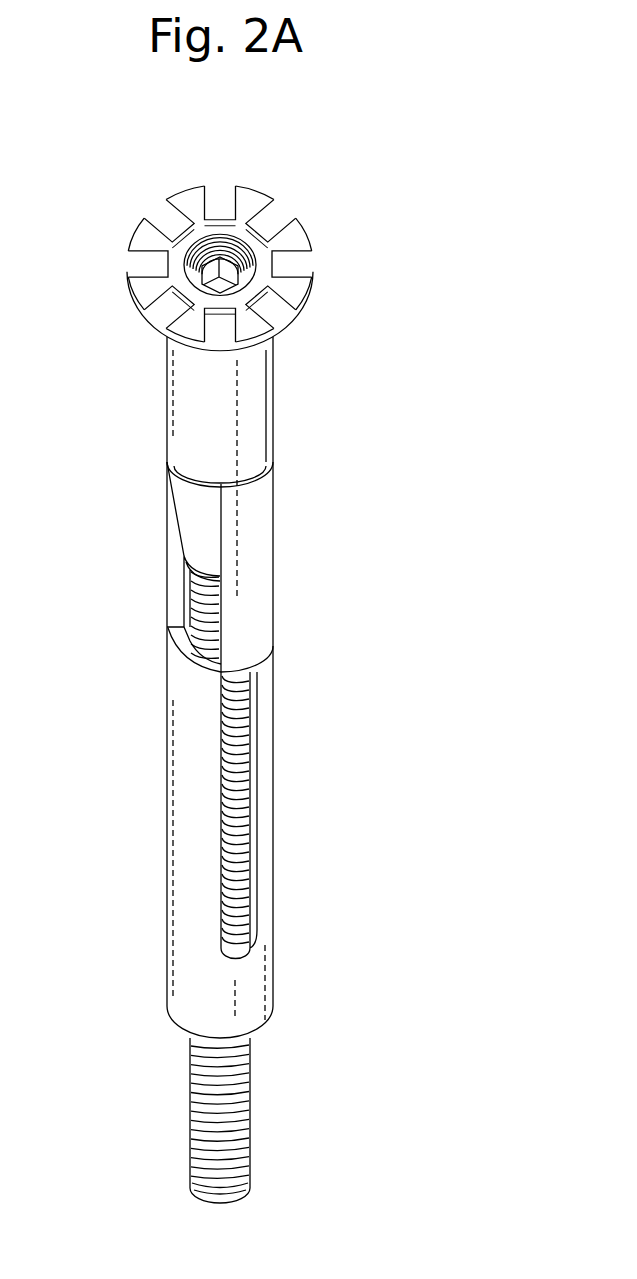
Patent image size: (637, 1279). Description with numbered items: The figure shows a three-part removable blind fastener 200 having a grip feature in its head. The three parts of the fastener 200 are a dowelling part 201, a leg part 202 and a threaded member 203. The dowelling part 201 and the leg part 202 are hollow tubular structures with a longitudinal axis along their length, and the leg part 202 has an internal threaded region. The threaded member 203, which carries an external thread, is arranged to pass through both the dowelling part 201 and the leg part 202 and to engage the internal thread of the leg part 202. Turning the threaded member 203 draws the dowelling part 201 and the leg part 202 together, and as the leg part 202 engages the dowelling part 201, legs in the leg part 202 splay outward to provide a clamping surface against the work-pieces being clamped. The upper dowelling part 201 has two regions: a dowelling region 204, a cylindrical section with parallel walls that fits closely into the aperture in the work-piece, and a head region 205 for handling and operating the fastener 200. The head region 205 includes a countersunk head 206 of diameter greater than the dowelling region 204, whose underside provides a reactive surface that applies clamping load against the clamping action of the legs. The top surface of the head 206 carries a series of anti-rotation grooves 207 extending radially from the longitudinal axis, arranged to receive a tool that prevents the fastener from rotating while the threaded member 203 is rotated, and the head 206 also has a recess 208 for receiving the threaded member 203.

The fastener 200 is at (342, 862).
The dowelling part 201 is at (94, 182).
The leg part 202 is at (94, 628).
The threaded member 203 is at (230, 1080).
The dowelling region 204 is at (338, 346).
The head region 205 is at (338, 184).
The countersunk head 206 is at (188, 200).
The anti-rotation grooves 207 is at (220, 197).
The recess 208 is at (243, 238).